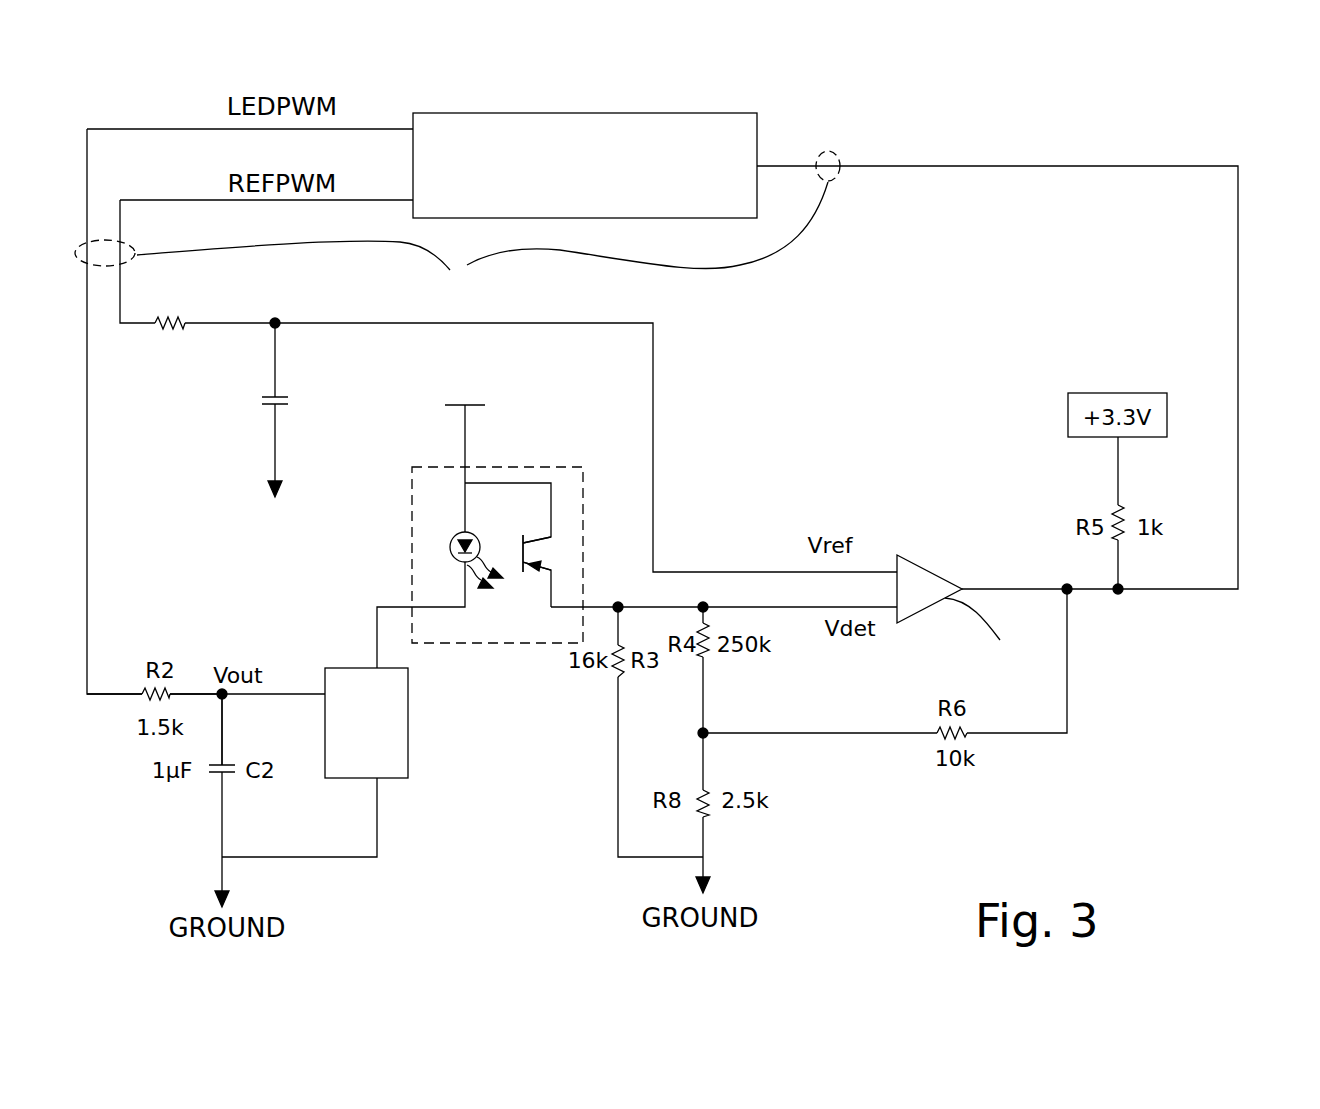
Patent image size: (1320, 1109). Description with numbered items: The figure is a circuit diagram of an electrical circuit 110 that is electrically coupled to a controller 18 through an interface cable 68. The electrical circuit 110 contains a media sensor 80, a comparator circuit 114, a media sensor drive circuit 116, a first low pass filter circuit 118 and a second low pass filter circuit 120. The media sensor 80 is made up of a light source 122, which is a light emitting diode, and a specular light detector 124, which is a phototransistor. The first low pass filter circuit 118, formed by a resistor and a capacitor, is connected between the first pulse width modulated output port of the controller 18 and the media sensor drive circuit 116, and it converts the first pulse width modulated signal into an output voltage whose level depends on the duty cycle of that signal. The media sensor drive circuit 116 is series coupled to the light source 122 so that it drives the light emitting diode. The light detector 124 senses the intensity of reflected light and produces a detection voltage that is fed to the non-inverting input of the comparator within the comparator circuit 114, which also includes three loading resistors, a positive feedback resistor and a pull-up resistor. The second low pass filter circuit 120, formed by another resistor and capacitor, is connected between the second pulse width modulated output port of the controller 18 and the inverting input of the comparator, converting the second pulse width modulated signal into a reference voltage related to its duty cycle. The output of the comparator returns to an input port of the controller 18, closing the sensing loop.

The controller 18 is at (575, 181).
The interface cable 68 is at (457, 227).
The second low pass filter circuit 120 is at (325, 357).
The first low pass filter circuit 118 is at (173, 615).
The light source 122 is at (455, 540).
The specular light detector 124 is at (568, 553).
The media sensor 80 is at (497, 565).
The media sensor drive circuit 116 is at (348, 740).
The comparator circuit 114 is at (984, 547).
The electrical circuit 110 is at (1122, 822).